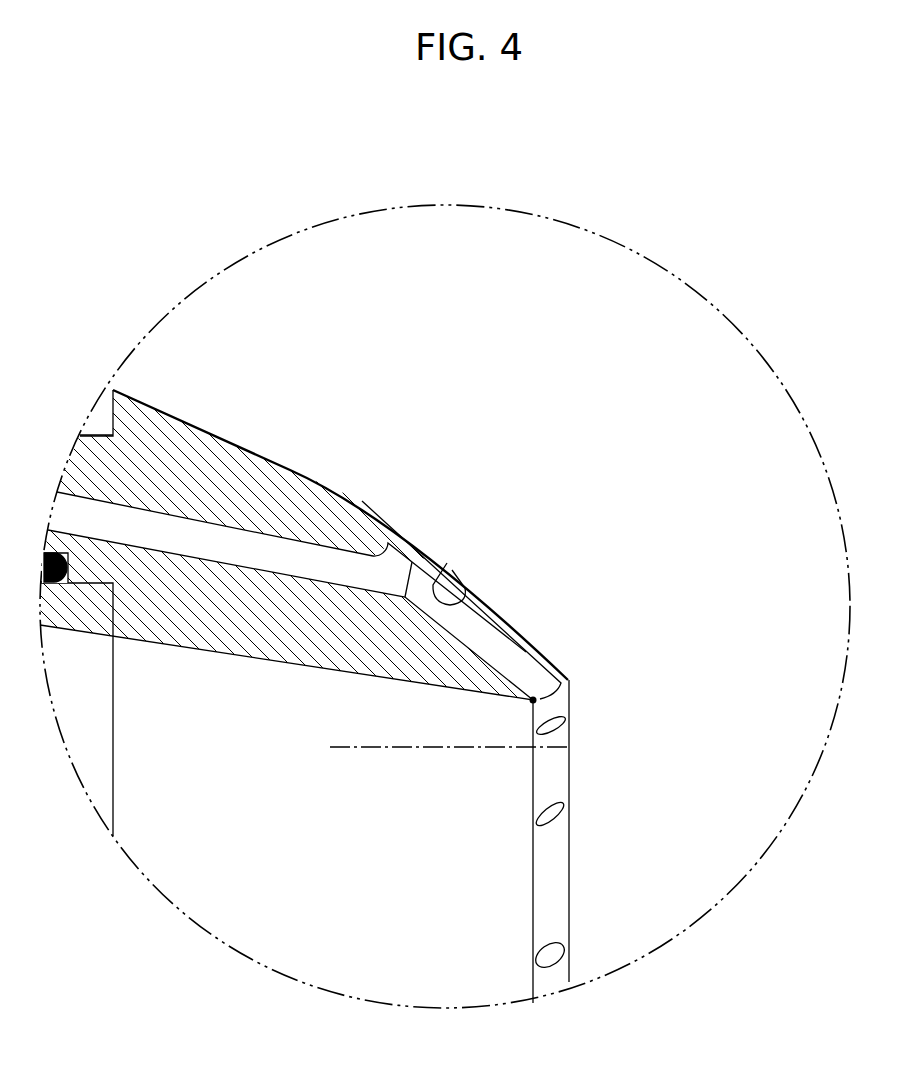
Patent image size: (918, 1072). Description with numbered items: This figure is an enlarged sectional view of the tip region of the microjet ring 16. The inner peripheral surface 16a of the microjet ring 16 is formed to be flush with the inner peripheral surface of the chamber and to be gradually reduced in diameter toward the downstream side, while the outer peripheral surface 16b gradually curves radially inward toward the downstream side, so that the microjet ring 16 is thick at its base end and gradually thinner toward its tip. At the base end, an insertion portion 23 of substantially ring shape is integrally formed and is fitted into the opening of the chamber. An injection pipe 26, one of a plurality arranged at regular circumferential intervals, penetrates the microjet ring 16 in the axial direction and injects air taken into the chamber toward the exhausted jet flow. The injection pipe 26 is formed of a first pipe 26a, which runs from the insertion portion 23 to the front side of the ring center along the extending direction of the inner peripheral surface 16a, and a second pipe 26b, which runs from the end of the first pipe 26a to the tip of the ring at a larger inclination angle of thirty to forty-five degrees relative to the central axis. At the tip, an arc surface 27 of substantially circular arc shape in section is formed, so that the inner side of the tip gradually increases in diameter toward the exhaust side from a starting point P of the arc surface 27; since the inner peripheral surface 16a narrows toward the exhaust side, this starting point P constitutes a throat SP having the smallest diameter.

The microjet ring 16 is at (331, 410).
The inner peripheral surface 16a is at (227, 657).
The outer peripheral surface 16b is at (220, 436).
The insertion portion 23 is at (97, 434).
The injection pipe 26 is at (558, 467).
The first pipe 26a is at (272, 541).
The second pipe 26b is at (447, 563).
The arc surface 27 is at (552, 693).
The throat SP is at (533, 890).
The starting point P is at (533, 700).